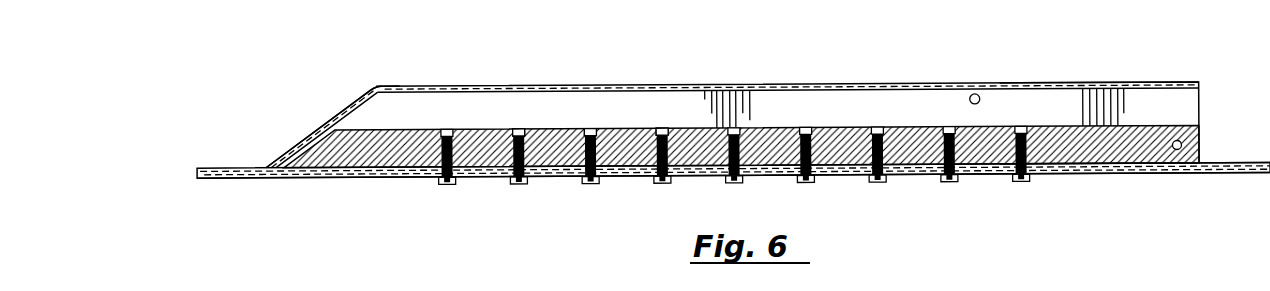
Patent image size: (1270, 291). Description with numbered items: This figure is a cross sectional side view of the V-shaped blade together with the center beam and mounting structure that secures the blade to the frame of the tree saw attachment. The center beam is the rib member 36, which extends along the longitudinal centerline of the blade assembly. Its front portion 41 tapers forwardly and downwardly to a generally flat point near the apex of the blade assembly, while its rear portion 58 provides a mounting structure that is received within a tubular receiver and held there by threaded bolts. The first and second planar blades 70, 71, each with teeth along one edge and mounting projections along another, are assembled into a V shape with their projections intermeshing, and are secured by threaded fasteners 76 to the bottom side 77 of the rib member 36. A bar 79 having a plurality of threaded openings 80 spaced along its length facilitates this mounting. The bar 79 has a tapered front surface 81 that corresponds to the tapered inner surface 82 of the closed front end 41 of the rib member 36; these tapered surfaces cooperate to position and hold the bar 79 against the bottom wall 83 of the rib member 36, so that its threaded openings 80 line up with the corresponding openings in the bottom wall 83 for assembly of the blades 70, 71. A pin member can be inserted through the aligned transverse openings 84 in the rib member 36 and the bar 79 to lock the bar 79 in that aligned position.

The rib member 36 is at (822, 85).
The front portion 41 is at (362, 110).
The rear portion 58 is at (1064, 85).
The first planar blade 70 is at (687, 193).
The second planar blade 71 is at (232, 177).
The threaded fasteners 76 is at (587, 183).
The bottom side 77 is at (402, 179).
The bar 79 is at (1147, 140).
The threaded openings 80 is at (518, 130).
The tapered front surface 81 is at (308, 147).
The tapered inner surface 82 is at (362, 108).
The bottom wall 83 is at (1113, 155).
The transverse openings 84 is at (1173, 152).